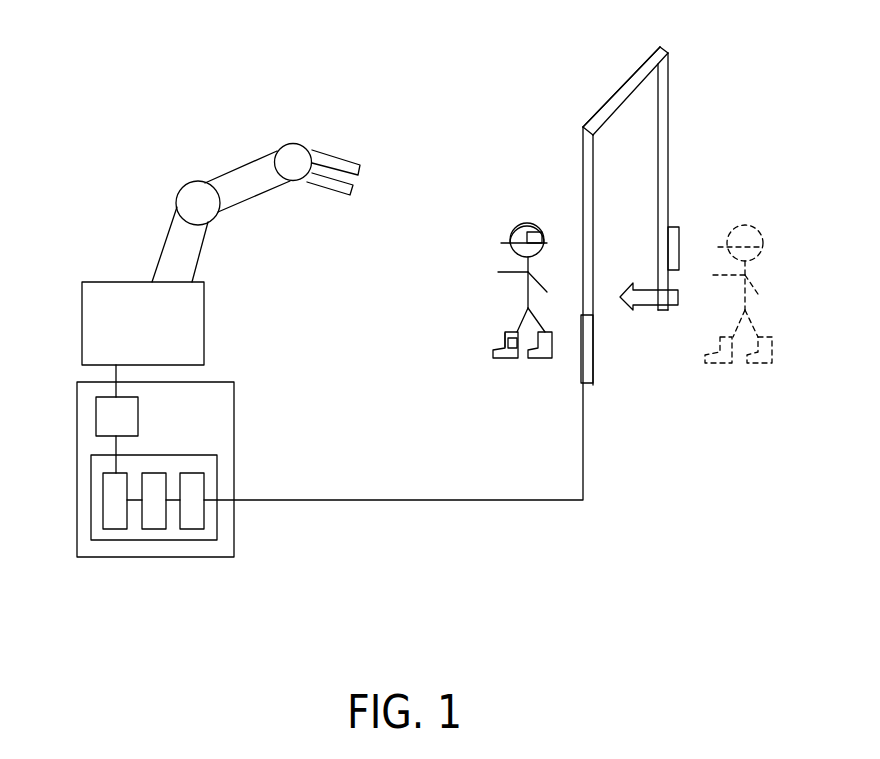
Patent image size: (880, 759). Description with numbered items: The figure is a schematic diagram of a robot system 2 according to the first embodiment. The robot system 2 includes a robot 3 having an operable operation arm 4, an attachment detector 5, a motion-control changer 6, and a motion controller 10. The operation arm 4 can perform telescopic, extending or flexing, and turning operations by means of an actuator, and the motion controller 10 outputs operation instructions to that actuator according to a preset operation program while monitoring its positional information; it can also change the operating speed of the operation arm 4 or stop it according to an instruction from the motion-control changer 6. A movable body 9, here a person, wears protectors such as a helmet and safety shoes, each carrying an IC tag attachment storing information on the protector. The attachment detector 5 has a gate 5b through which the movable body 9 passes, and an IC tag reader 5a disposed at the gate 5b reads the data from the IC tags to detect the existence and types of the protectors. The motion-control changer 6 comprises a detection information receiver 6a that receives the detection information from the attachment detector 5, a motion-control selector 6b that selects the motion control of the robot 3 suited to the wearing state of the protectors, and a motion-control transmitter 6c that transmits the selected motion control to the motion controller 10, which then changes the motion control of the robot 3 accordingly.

The robot system 2 is at (313, 102).
The robot 3 is at (123, 290).
The operation arm 4 is at (233, 177).
The motion controller 10 is at (102, 418).
The motion-control changer 6 is at (152, 501).
The detection information receiver 6a is at (193, 523).
The motion-control selector 6b is at (152, 525).
The motion-control transmitter 6c is at (113, 520).
The movable body 9 is at (467, 244).
The attachment detector 5 is at (691, 258).
The IC tag reader 5a is at (600, 322).
The gate 5b is at (663, 118).